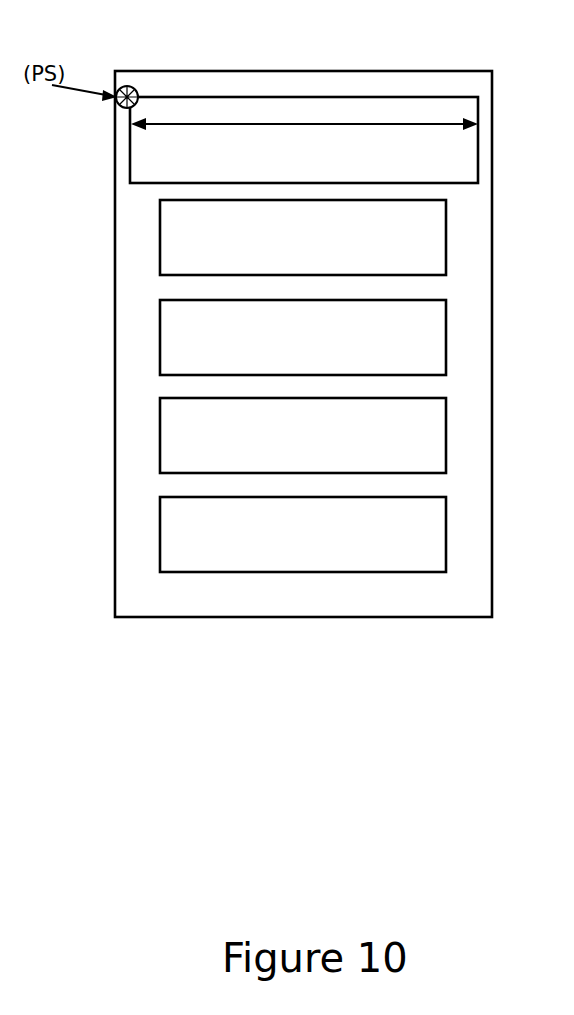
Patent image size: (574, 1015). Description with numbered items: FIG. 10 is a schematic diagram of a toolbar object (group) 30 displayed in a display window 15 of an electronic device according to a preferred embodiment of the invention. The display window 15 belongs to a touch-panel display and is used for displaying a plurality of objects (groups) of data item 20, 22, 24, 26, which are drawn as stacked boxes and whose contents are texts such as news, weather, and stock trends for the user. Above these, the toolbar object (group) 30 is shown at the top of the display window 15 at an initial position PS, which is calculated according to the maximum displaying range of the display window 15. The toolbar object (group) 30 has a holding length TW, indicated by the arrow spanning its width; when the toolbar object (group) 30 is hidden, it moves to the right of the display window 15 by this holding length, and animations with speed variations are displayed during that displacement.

The display window 15 is at (294, 71).
The toolbar object (group) 30 is at (478, 138).
The object (group) of data item 20 is at (446, 242).
The object (group) of data item 22 is at (446, 340).
The object (group) of data item 24 is at (446, 432).
The object (group) of data item 26 is at (446, 531).